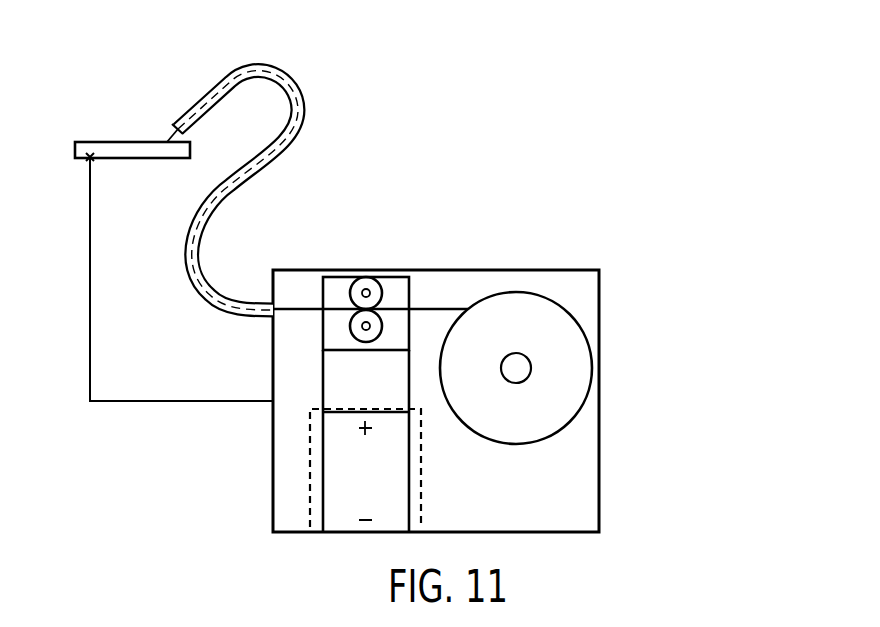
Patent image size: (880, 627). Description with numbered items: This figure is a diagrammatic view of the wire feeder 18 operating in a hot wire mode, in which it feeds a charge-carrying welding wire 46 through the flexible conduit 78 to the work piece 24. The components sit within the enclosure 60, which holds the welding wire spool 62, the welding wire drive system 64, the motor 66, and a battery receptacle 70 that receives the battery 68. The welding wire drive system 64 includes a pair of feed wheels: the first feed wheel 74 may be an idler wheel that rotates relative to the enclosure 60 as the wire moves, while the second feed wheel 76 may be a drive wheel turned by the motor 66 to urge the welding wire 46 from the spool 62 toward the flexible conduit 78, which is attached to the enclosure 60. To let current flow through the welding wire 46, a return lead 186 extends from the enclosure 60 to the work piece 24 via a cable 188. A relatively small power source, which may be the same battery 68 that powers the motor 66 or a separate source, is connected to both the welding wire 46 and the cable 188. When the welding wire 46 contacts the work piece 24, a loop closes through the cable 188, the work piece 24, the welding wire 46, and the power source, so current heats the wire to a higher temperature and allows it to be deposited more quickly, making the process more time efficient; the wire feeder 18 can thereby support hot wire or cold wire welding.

The wire feeder 18 is at (530, 141).
The work piece 24 is at (90, 141).
The welding wire 46 is at (297, 308).
The enclosure 60 is at (600, 396).
The welding wire spool 62 is at (503, 335).
The welding wire drive system 64 is at (410, 290).
The motor 66 is at (352, 385).
The battery 68 is at (352, 487).
The battery receptacle 70 is at (421, 469).
The first feed wheel 74 is at (351, 281).
The second feed wheel 76 is at (350, 327).
The flexible conduit 78 is at (287, 78).
The return lead 186 is at (86, 162).
The cable 188 is at (180, 403).